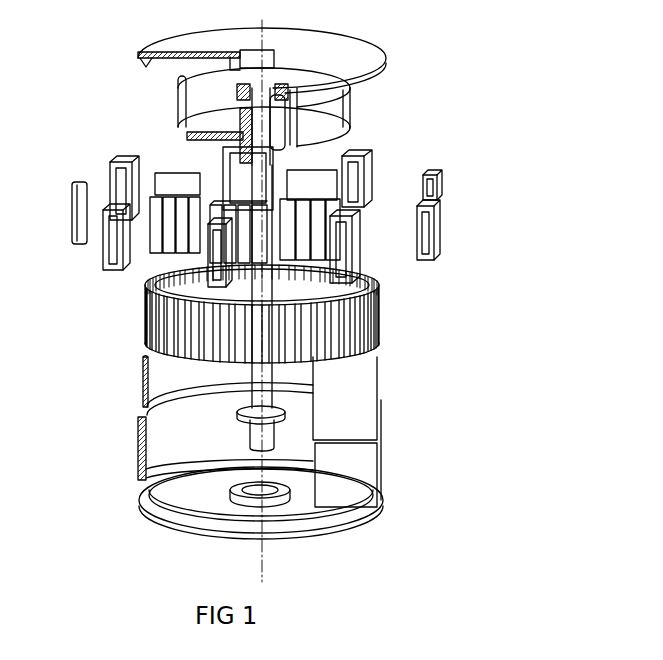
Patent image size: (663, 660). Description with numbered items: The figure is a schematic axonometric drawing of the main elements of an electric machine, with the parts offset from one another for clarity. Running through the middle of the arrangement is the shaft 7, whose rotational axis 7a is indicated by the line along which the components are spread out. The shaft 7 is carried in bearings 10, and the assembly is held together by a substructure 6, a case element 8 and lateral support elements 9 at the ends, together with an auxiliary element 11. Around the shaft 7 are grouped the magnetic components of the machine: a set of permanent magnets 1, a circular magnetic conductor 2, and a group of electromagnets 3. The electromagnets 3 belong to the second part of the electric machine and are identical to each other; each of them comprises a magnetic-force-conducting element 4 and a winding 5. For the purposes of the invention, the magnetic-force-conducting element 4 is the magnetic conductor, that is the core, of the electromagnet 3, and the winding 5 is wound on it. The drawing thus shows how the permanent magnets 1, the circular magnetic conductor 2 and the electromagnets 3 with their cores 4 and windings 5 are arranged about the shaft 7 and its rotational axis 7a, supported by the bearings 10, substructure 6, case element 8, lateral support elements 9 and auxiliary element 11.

The permanent magnets 1 is at (120, 350).
The circular magnetic conductor 2 is at (157, 377).
The electromagnets 3 is at (140, 263).
The magnetic-force-conducting element 4 is at (243, 178).
The winding 5 is at (526, 270).
The substructure 6 is at (526, 180).
The shaft 7 is at (526, 380).
The rotational axis 7a is at (512, 565).
The case element 8 is at (526, 430).
The lateral support elements 9 is at (526, 91).
The bearings 10 is at (512, 131).
The auxiliary element 11 is at (183, 116).